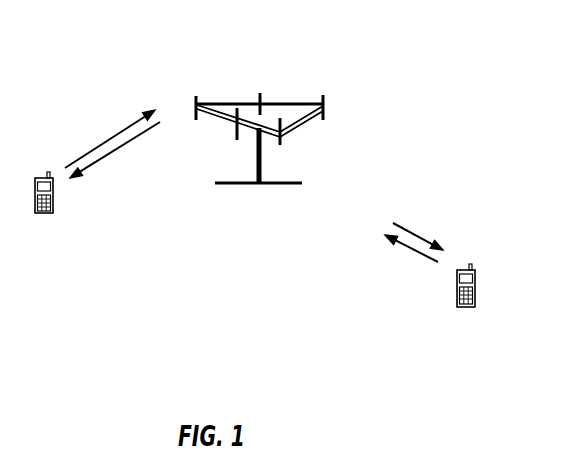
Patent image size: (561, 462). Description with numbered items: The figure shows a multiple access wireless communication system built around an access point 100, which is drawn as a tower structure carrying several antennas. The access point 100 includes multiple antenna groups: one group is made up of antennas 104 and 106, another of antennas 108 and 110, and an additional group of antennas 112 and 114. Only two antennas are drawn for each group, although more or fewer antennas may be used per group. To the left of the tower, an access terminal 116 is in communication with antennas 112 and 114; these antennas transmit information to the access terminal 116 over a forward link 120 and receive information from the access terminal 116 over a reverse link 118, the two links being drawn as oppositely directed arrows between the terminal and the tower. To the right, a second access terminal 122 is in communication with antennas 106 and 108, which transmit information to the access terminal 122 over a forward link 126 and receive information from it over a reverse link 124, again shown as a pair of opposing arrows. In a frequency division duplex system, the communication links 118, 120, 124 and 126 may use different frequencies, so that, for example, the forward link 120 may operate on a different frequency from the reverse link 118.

The access point 100 is at (240, 184).
The antenna 104 is at (265, 133).
The antenna 106 is at (282, 130).
The antenna 108 is at (325, 115).
The antenna 110 is at (260, 92).
The antenna 112 is at (197, 100).
The antenna 114 is at (237, 140).
The access terminal 116 is at (45, 178).
The reverse link 118 is at (108, 140).
The forward link 120 is at (122, 147).
The access terminal 122 is at (467, 266).
The reverse link 124 is at (405, 246).
The forward link 126 is at (420, 237).